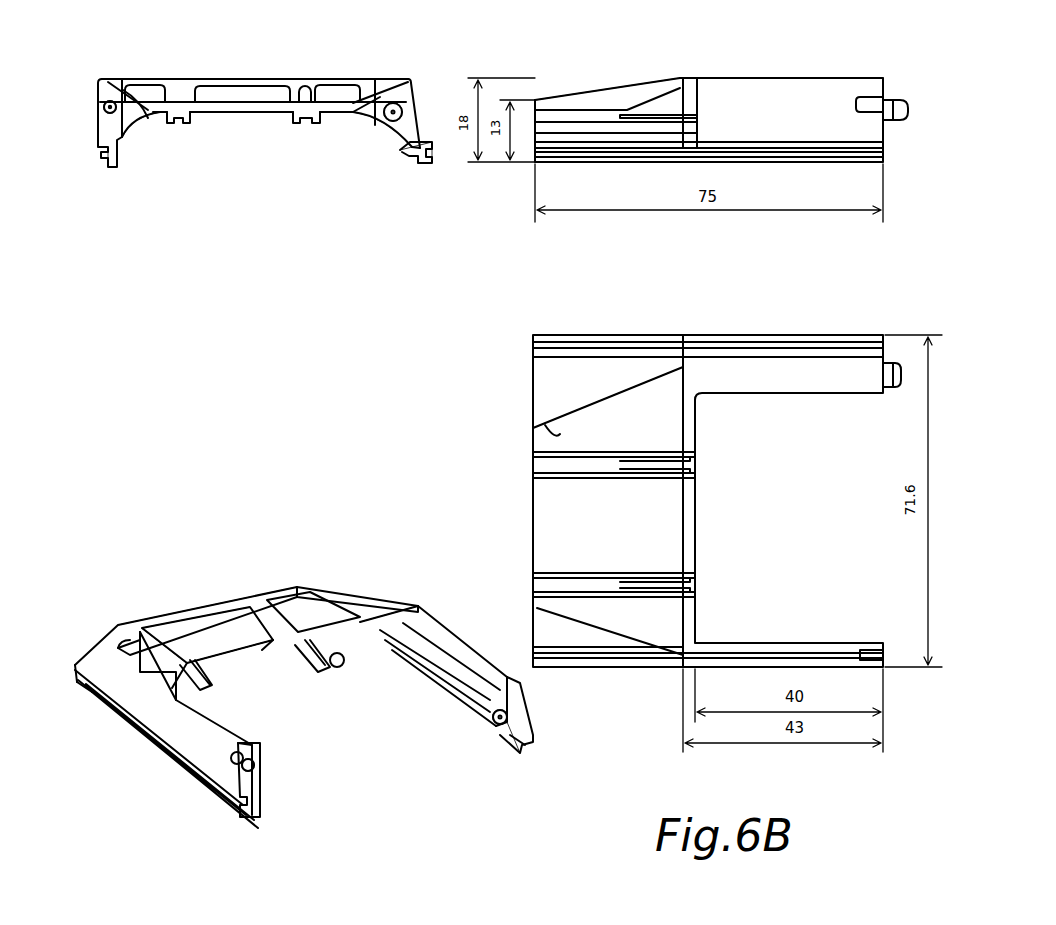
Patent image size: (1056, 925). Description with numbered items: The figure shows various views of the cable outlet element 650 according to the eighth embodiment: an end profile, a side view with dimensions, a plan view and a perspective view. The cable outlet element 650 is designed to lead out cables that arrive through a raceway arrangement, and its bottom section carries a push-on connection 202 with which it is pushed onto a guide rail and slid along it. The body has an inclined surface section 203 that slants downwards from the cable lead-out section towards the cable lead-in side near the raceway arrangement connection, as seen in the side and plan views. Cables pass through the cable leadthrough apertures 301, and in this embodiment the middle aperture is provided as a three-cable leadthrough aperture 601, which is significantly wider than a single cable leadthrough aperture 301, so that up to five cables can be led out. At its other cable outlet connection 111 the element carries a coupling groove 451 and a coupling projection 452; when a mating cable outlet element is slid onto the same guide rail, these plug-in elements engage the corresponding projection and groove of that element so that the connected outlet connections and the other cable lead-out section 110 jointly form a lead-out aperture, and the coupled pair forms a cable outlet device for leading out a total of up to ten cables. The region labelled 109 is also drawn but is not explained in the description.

The other coupling groove 451 is at (100, 107).
The other coupling projection 452 is at (395, 109).
The push-on connection 202 is at (105, 168).
The cable leadthrough aperture 301 is at (153, 120).
The three-cable leadthrough aperture 601 is at (247, 117).
The other cable outlet connection 111 is at (412, 137).
The inclined surface section 203 is at (596, 100).
The base body 109 is at (535, 142).
The other cable lead-out section 110 is at (800, 518).
The cable outlet element 650 is at (970, 55).